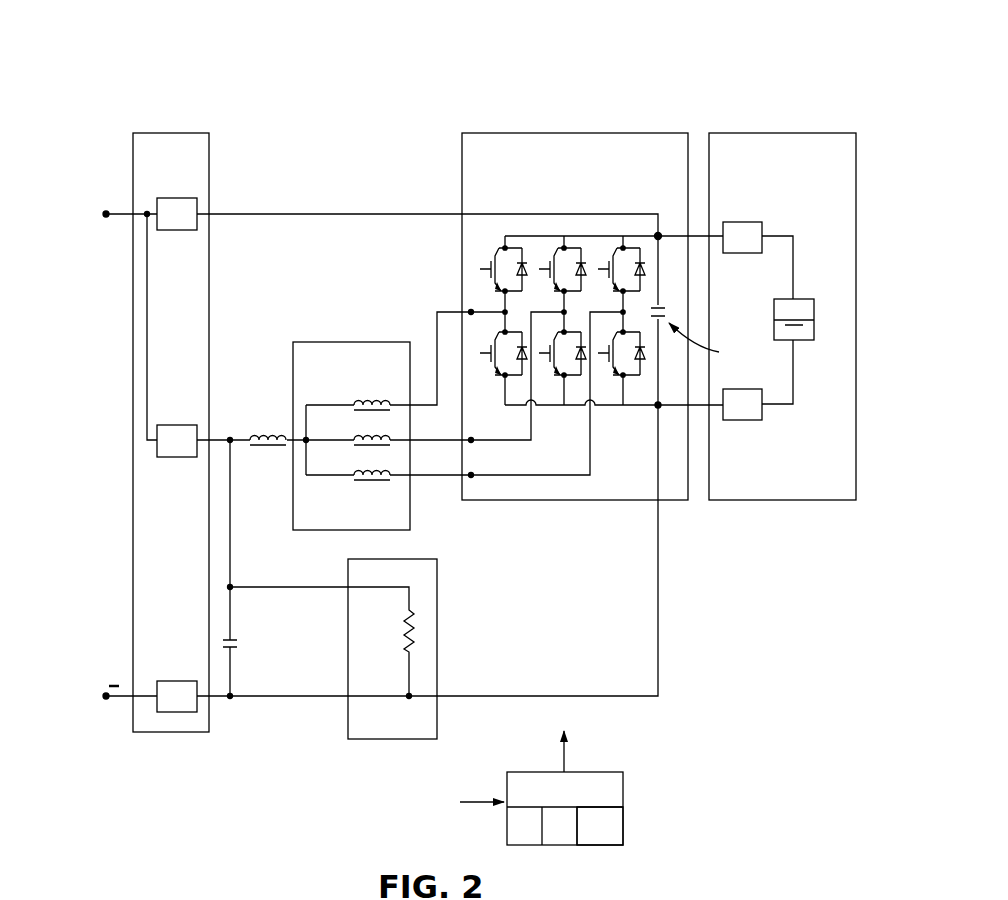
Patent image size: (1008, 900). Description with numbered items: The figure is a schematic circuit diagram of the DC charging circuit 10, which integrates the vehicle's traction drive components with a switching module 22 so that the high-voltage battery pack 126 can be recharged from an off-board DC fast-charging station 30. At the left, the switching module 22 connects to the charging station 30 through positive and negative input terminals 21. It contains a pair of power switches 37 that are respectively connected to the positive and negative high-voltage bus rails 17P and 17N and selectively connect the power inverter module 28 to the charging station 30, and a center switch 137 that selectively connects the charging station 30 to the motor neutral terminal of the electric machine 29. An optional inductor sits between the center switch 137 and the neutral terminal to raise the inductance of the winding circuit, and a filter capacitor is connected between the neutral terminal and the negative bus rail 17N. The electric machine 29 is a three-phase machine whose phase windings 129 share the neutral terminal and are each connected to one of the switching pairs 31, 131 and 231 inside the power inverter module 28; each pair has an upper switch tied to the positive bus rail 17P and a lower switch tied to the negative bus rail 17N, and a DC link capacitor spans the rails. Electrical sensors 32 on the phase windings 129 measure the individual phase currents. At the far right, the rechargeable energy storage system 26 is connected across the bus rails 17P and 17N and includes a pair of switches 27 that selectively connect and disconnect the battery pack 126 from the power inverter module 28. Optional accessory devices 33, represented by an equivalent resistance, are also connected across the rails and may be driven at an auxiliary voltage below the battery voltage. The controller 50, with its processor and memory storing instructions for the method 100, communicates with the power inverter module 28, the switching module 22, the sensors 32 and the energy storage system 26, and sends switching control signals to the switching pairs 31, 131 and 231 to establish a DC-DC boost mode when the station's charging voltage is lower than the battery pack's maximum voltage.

The DC charging circuit 10 is at (158, 50).
The switching module 22 is at (201, 131).
The power switches 37 is at (191, 189).
The center switch 137 is at (168, 411).
The input terminals 21 is at (96, 227).
The off-board DC fast-charging station 30 is at (47, 197).
The positive high-voltage bus rail 17P is at (537, 213).
The negative high-voltage bus rail 17N is at (492, 696).
The power inverter module 28 is at (553, 133).
The PIM switching pair 31 is at (514, 381).
The PIM switching pair 131 is at (573, 381).
The PIM switching pair 231 is at (632, 381).
The electrical sensors 32 is at (471, 310).
The electric machine 29 is at (330, 341).
The phase windings 129 is at (370, 388).
The rechargeable energy storage system 26 is at (748, 133).
The pair of switches 27 is at (770, 213).
The high-voltage battery pack 126 is at (806, 341).
The accessory devices 33 is at (437, 645).
The controller 50 is at (548, 773).
The method 100 is at (600, 826).